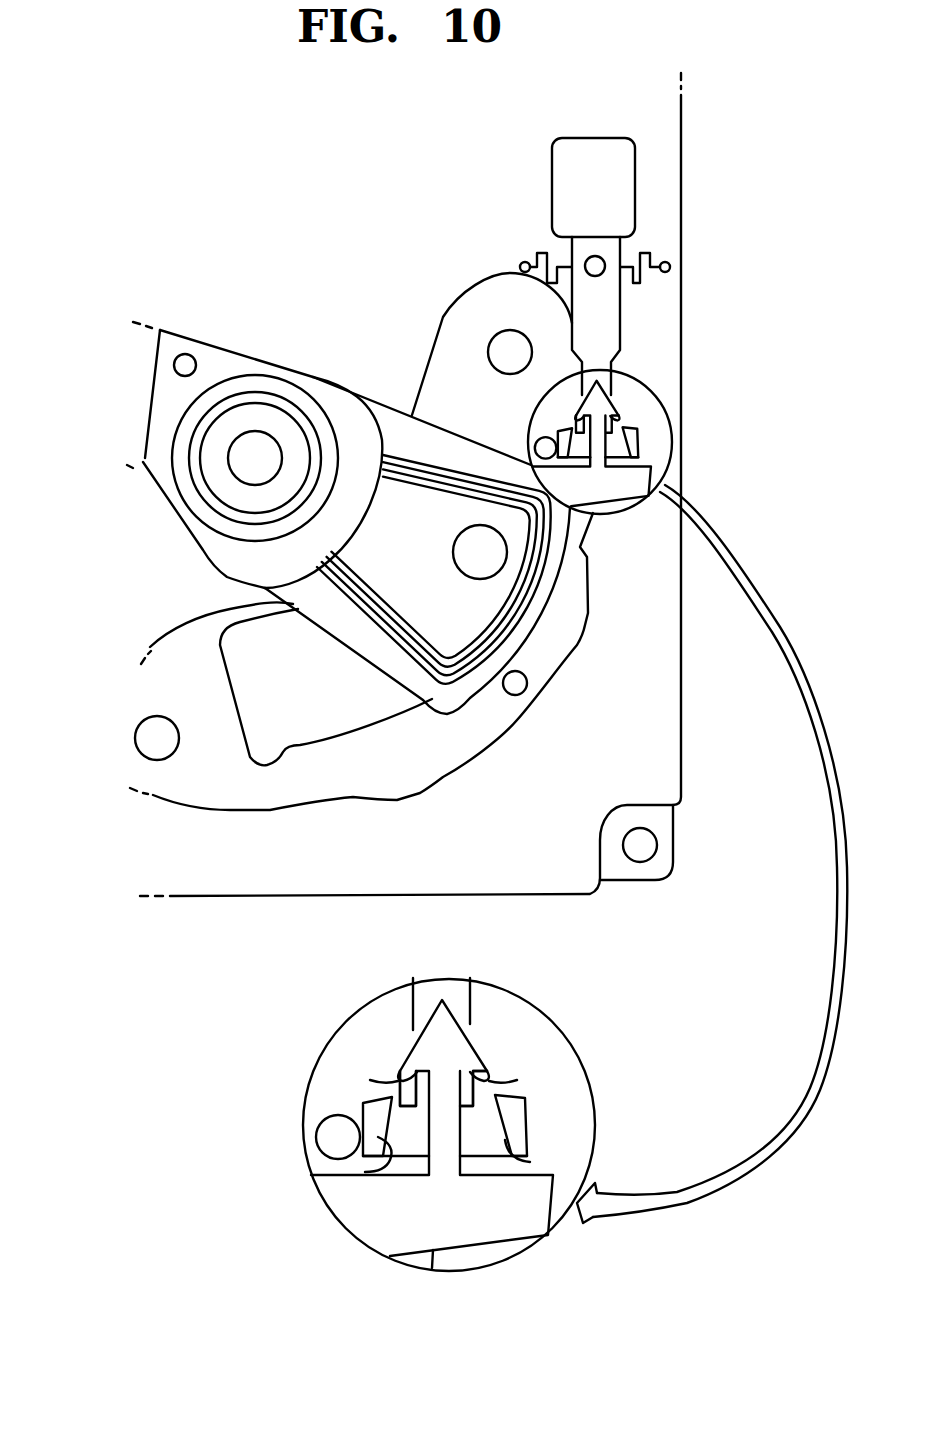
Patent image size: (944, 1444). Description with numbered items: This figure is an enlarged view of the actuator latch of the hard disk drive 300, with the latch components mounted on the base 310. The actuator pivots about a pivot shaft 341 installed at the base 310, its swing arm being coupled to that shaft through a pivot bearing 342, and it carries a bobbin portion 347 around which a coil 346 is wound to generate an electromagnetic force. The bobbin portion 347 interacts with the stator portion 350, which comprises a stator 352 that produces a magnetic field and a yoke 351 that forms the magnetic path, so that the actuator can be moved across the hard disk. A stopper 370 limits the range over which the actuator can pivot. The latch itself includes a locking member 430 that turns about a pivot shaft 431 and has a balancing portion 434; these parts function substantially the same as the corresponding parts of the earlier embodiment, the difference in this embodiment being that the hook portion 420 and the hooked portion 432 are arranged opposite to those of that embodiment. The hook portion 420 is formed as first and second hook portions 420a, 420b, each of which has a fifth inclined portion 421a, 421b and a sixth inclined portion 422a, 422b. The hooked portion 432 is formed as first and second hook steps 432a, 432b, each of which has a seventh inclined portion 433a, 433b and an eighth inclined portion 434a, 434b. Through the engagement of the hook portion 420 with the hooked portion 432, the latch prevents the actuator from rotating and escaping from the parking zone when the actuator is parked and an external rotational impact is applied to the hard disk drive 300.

The hard disk drive 300 is at (662, 895).
The base 310 is at (652, 738).
The pivot shaft 341 is at (257, 447).
The pivot bearing 342 is at (235, 390).
The coil 346 is at (460, 693).
The bobbin portion 347 is at (430, 698).
The stator portion 350 is at (333, 845).
The yoke 351 is at (268, 793).
The stator 352 is at (322, 733).
The stopper 370 is at (327, 1135).
The hook portion 420 is at (645, 406).
The first hook portion 420a is at (398, 1067).
The second hook portion 420b is at (488, 1066).
The fifth inclined portion 421a is at (397, 1079).
The fifth inclined portion 421b is at (490, 1078).
The sixth inclined portion 422a is at (413, 1017).
The sixth inclined portion 422b is at (470, 1017).
The locking member 430 is at (618, 245).
The pivot shaft 431 is at (592, 259).
The hooked portion 432 is at (649, 445).
The first hook step 432a is at (367, 1116).
The second hook step 432b is at (523, 1115).
The seventh inclined portion 433a is at (382, 1104).
The seventh inclined portion 433b is at (510, 1092).
The balancing portion 434 is at (598, 147).
The eighth inclined portion 434a is at (365, 1177).
The eighth inclined portion 434b is at (530, 1163).